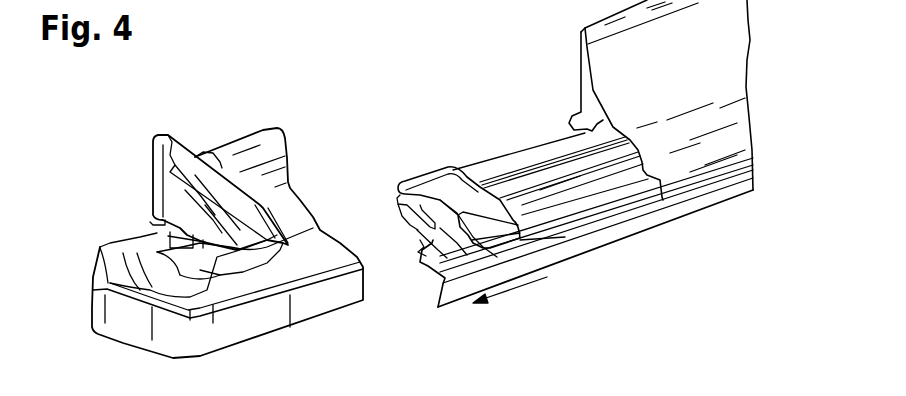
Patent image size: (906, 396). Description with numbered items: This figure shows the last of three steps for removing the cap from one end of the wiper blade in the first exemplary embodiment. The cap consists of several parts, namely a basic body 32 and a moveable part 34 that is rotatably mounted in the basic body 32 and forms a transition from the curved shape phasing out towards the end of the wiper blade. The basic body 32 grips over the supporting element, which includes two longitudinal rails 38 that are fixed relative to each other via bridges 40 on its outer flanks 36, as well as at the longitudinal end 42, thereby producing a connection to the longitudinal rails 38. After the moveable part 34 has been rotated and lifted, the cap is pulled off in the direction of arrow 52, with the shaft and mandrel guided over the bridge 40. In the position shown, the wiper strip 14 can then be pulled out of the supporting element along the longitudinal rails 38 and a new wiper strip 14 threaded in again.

The wiper strip 14 is at (557, 163).
The basic body 32 is at (243, 333).
The moveable part 34 is at (157, 140).
The outer flanks 36 is at (472, 145).
The longitudinal rails 38 is at (530, 152).
The bridge 40 is at (438, 183).
The longitudinal end 42 is at (393, 210).
The arrow 52 is at (518, 292).